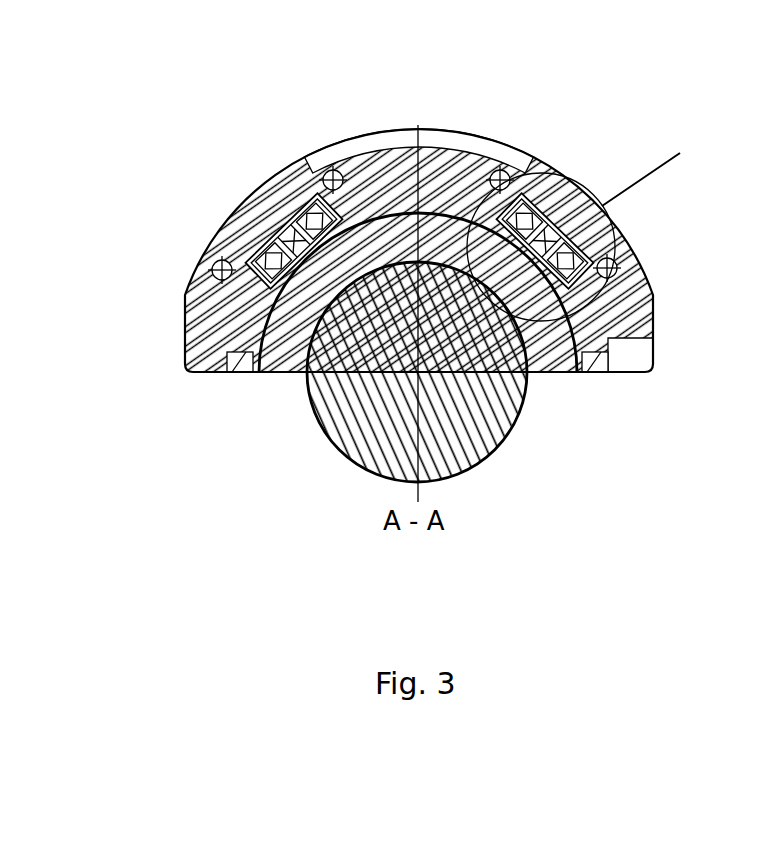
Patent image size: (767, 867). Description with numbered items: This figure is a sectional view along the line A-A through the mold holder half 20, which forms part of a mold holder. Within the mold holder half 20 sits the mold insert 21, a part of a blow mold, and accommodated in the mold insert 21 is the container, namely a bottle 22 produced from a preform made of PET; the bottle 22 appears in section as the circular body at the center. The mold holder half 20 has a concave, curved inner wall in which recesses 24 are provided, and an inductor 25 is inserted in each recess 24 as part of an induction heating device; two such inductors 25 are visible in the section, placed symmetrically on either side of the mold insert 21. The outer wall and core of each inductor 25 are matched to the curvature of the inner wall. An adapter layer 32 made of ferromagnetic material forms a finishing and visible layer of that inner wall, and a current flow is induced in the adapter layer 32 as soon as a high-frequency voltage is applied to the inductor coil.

The mold holder half 20 is at (419, 301).
The mold insert 21 is at (287, 340).
The bottle 22 is at (363, 418).
The recess 24 is at (568, 182).
The inductor 25 is at (285, 220).
The adapter layer 32 is at (253, 323).